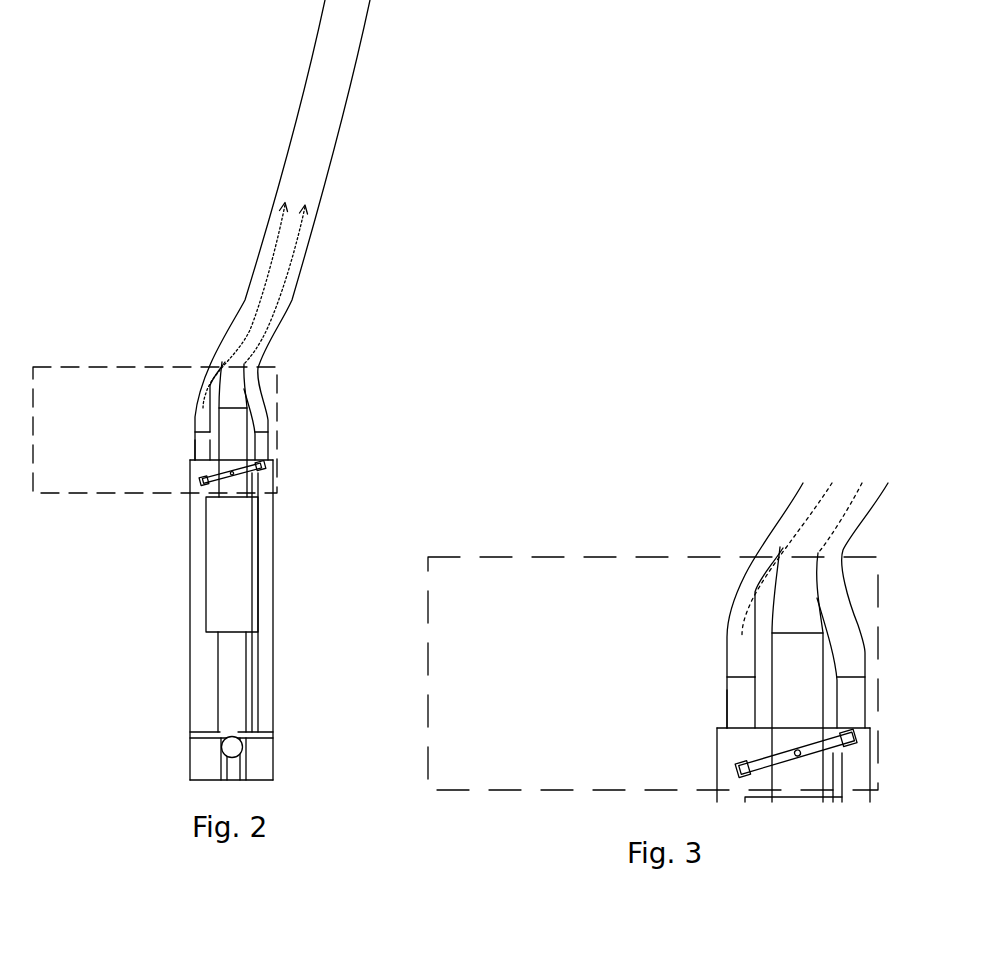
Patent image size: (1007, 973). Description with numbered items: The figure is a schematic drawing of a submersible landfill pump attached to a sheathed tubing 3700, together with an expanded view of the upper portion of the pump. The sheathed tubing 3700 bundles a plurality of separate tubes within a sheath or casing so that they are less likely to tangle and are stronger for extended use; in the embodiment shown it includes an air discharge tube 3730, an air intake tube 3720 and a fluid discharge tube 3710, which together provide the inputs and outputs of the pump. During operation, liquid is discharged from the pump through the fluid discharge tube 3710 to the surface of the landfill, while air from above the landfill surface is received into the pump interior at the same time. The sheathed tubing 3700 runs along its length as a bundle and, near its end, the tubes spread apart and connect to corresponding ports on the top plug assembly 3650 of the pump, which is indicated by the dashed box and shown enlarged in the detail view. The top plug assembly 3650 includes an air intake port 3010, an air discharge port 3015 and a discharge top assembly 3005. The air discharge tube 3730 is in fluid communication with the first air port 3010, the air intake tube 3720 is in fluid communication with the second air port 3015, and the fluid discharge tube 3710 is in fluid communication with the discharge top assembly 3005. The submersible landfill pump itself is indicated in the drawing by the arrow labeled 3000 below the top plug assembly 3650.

In FIG. 2, the sheathed tubing 3700 is at (305, 178).
In FIG. 2, the air intake tube 3720 is at (222, 364).
In FIG. 3, the air intake tube 3720 is at (783, 552).
In FIG. 2, the fluid discharge tube 3710 is at (235, 393).
In FIG. 3, the fluid discharge tube 3710 is at (800, 610).
In FIG. 2, the air discharge tube 3730 is at (267, 421).
In FIG. 3, the air discharge tube 3730 is at (857, 660).
In FIG. 2, the top plug assembly 3650 is at (175, 367).
In FIG. 3, the top plug assembly 3650 is at (690, 557).
In FIG. 2, the discharge top assembly 3005 is at (232, 437).
In FIG. 3, the discharge top assembly 3005 is at (793, 687).
In FIG. 2, the air discharge port 3015 is at (203, 450).
In FIG. 3, the air discharge port 3015 is at (743, 712).
In FIG. 2, the air intake port 3010 is at (267, 452).
In FIG. 3, the air intake port 3010 is at (857, 713).
In FIG. 2, the valve assembly 3000 is at (157, 602).